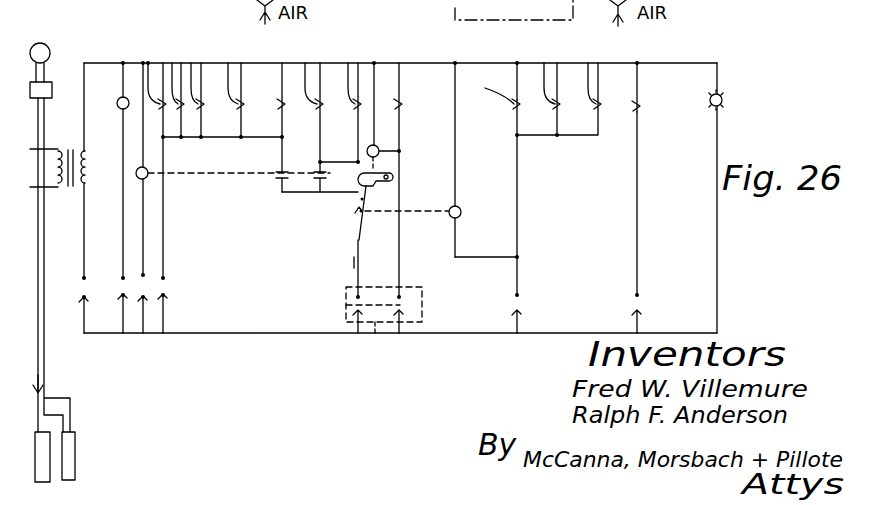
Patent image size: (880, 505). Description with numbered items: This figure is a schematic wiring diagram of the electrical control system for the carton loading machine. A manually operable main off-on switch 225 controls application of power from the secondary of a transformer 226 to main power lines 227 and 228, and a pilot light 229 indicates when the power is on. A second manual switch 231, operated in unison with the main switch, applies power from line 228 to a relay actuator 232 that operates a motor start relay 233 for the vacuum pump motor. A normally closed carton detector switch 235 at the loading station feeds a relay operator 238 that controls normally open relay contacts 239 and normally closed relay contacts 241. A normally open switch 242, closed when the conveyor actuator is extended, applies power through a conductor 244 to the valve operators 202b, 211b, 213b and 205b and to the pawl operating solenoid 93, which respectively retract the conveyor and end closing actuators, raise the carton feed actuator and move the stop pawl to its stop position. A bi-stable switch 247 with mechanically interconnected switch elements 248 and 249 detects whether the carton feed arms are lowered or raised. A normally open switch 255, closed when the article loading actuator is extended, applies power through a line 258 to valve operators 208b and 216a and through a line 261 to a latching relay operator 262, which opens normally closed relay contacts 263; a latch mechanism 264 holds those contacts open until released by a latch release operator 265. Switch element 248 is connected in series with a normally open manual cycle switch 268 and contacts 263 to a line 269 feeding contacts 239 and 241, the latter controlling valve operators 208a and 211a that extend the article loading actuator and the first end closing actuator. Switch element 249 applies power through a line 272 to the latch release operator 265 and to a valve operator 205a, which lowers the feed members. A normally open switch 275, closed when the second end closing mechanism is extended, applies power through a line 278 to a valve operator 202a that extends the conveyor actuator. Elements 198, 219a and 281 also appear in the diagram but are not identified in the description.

The pawl operating solenoid 93 is at (279, 100).
The electrode tubes 198 is at (40, 483).
The valve operator 202a is at (640, 108).
The valve operator 202b is at (147, 62).
The valve operator 205a is at (396, 100).
The valve operator 205b is at (230, 62).
The valve operator 208a is at (305, 62).
The valve operator 208b is at (491, 85).
The valve operator 211a is at (350, 62).
The valve operator 211b is at (173, 62).
The valve operator 213b is at (195, 62).
The valve operator 216a is at (588, 62).
The float 219a is at (50, 46).
The main off-on switch 225 is at (84, 297).
The transformer 226 is at (86, 179).
The main power line 227 is at (103, 62).
The main power line 228 is at (115, 337).
The pilot light 229 is at (724, 97).
The second manually operable switch 231 is at (118, 290).
The relay actuator 232 is at (119, 108).
The motor start relay 233 is at (52, 82).
The carton detector switch 235 is at (145, 284).
The relay operator 238 is at (147, 180).
The normally open relay contacts 239 is at (276, 182).
The normally closed relay contacts 241 is at (316, 168).
The switch 242 is at (168, 292).
The conductor 244 is at (166, 160).
The switch 247 is at (373, 340).
The switch element 248 is at (346, 303).
The switch element 249 is at (408, 304).
The switch 255 is at (528, 303).
The line 258 is at (518, 210).
The line 261 is at (484, 256).
The latching relay operator 262 is at (450, 207).
The normally closed relay contacts 263 is at (353, 211).
The latch mechanism 264 is at (383, 186).
The latch release operator 265 is at (368, 147).
The cycle switch 268 is at (358, 262).
The line 269 is at (330, 194).
The line 272 is at (402, 243).
The switch 275 is at (647, 306).
The line 278 is at (639, 214).
The fluid flow arrow 281 is at (33, 380).